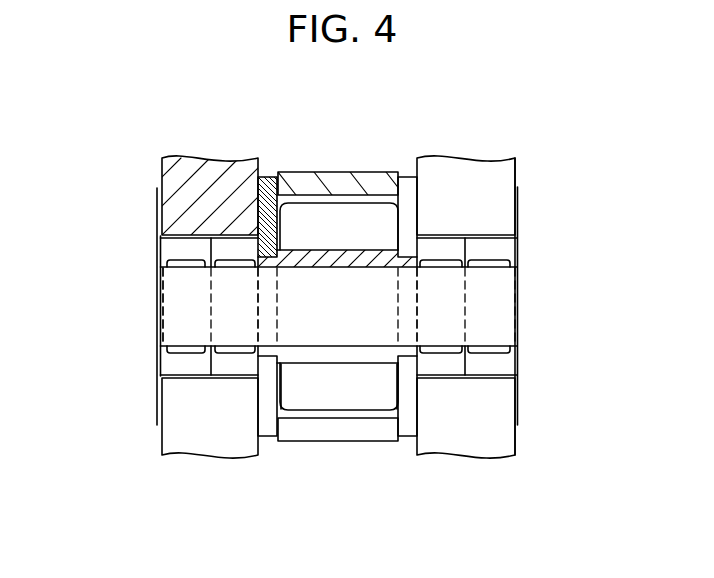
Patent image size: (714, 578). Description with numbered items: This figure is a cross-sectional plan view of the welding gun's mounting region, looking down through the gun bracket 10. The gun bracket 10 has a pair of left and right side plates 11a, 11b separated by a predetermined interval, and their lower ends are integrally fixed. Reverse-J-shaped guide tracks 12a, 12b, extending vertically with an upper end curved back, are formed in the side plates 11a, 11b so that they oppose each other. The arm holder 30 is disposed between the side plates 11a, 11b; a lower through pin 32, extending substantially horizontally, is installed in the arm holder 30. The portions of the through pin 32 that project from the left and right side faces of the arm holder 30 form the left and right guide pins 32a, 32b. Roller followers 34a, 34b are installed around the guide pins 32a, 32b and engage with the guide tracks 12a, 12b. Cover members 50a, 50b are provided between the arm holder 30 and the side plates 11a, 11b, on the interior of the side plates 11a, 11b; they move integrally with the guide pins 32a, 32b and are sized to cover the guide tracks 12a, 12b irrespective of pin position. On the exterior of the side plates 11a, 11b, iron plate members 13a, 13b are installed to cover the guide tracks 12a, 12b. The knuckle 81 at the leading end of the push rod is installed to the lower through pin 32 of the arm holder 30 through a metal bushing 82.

The gun bracket 10 is at (337, 306).
The side plate 11a is at (500, 173).
The side plate 11b is at (176, 175).
The guide track 12a is at (498, 239).
The guide track 12b is at (167, 240).
The plate member 13a is at (518, 207).
The plate member 13b is at (157, 207).
The arm holder 30 is at (336, 182).
The through pin 32 is at (323, 323).
The guide pin 32a is at (444, 323).
The guide pin 32b is at (189, 323).
The roller follower 34a is at (437, 367).
The roller follower 34b is at (226, 370).
The cover member 50a is at (407, 176).
The cover member 50b is at (268, 176).
The knuckle 81 is at (323, 397).
The metal bushing 82 is at (370, 353).